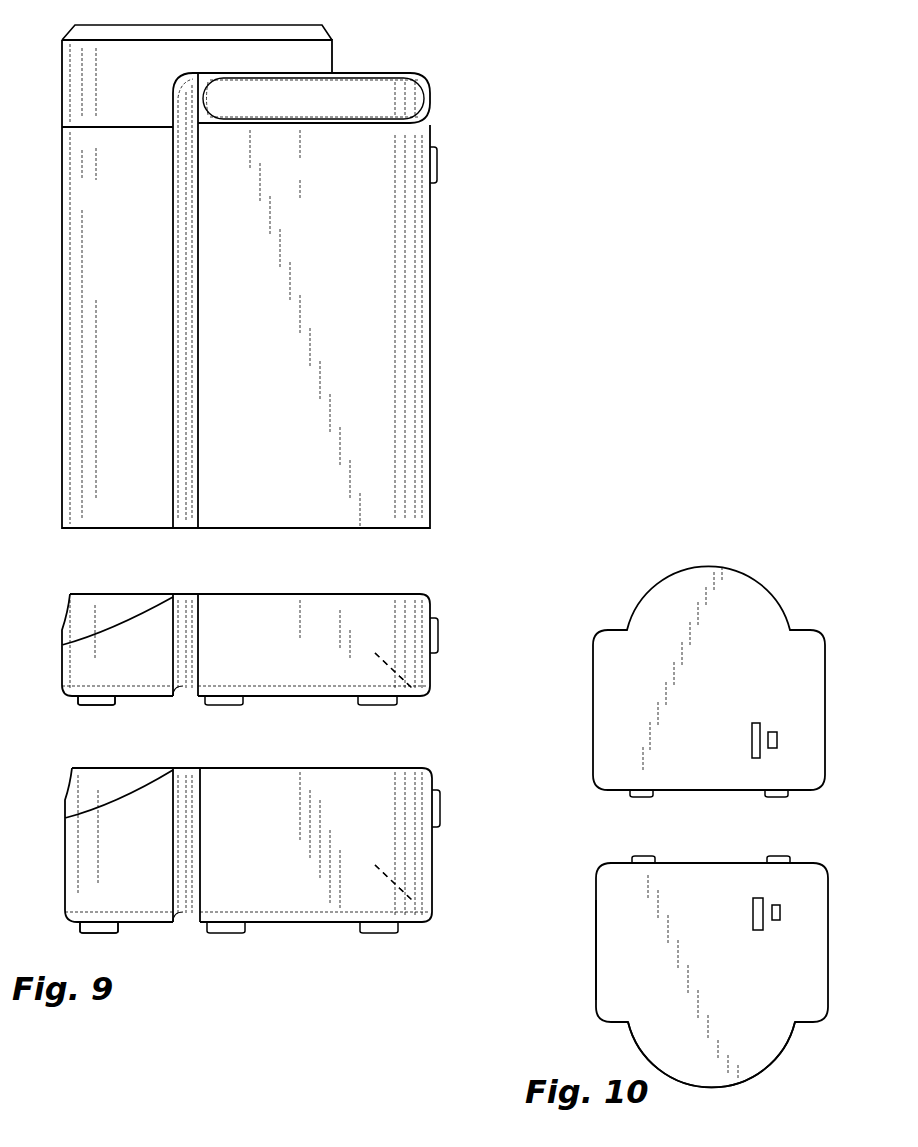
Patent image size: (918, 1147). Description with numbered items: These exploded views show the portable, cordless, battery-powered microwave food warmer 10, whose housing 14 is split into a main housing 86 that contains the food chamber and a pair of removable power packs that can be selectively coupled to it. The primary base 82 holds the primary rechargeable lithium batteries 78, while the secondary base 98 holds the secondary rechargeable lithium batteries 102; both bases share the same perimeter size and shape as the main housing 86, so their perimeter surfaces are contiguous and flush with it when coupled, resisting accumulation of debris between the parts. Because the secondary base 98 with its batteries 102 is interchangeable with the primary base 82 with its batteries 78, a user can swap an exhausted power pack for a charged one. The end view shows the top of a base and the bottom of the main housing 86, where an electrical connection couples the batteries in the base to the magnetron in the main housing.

In FIG. 9, the microwave food warmer 10 is at (462, 85).
In FIG. 10, the microwave food warmer 10 is at (572, 990).
In FIG. 9, the housing 14 is at (412, 233).
In FIG. 9, the rechargeable lithium batteries 78 is at (428, 702).
In FIG. 9, the base 82 is at (377, 602).
In FIG. 10, the base 82 is at (760, 1040).
In FIG. 9, the main housing 86 is at (412, 315).
In FIG. 10, the main housing 86 is at (755, 613).
In FIG. 9, the secondary base 98 is at (363, 770).
In FIG. 10, the secondary base 98 is at (711, 1054).
In FIG. 9, the secondary rechargeable lithium batteries 102 is at (432, 913).